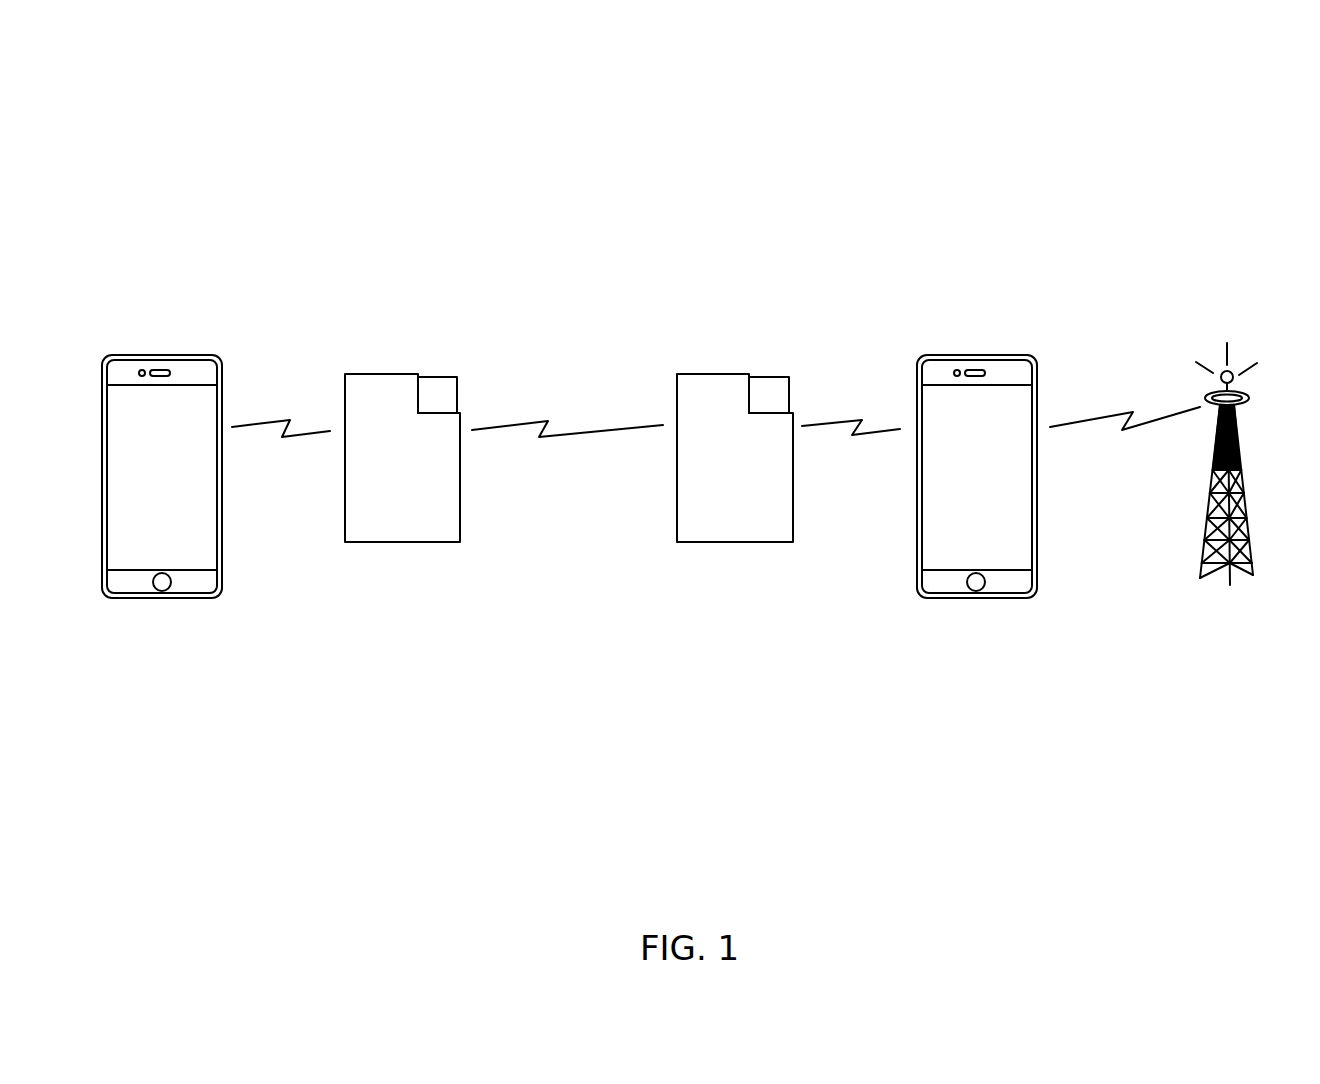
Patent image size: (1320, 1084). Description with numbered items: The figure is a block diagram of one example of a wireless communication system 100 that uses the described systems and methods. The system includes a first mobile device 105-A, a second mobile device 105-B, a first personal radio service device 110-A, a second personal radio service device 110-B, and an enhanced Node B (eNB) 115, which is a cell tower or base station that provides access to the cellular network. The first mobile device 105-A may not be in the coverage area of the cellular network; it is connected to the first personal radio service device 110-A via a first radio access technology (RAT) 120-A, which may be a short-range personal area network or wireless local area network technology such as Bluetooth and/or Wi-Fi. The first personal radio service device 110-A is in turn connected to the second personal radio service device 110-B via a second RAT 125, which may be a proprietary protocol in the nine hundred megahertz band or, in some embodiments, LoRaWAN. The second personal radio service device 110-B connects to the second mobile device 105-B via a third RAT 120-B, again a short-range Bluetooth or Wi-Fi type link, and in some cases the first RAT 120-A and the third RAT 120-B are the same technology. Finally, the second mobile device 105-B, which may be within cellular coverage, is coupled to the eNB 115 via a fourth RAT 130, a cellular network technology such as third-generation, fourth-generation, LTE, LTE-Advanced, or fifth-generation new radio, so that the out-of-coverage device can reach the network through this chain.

The wireless communication system 100 is at (1185, 120).
The first mobile device 105-A is at (158, 600).
The second mobile device 105-B is at (976, 600).
The first personal radio service device 110-A is at (390, 542).
The second personal radio service device 110-B is at (740, 542).
The enhanced Node B (eNB) 115 is at (1236, 590).
The first radio access technology (RAT) 120-A is at (285, 418).
The third radio access technology (RAT) 120-B is at (845, 420).
The second radio access technology (RAT) 125 is at (585, 432).
The fourth radio access technology (RAT) 130 is at (1122, 412).